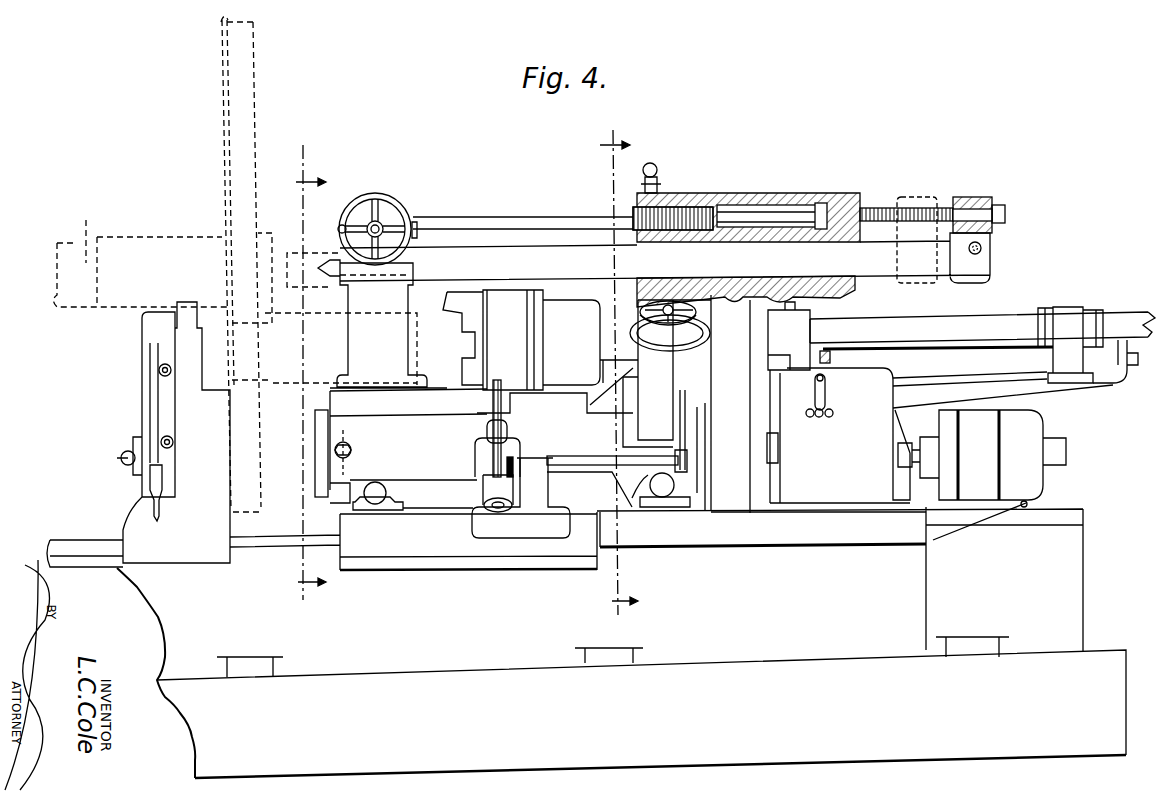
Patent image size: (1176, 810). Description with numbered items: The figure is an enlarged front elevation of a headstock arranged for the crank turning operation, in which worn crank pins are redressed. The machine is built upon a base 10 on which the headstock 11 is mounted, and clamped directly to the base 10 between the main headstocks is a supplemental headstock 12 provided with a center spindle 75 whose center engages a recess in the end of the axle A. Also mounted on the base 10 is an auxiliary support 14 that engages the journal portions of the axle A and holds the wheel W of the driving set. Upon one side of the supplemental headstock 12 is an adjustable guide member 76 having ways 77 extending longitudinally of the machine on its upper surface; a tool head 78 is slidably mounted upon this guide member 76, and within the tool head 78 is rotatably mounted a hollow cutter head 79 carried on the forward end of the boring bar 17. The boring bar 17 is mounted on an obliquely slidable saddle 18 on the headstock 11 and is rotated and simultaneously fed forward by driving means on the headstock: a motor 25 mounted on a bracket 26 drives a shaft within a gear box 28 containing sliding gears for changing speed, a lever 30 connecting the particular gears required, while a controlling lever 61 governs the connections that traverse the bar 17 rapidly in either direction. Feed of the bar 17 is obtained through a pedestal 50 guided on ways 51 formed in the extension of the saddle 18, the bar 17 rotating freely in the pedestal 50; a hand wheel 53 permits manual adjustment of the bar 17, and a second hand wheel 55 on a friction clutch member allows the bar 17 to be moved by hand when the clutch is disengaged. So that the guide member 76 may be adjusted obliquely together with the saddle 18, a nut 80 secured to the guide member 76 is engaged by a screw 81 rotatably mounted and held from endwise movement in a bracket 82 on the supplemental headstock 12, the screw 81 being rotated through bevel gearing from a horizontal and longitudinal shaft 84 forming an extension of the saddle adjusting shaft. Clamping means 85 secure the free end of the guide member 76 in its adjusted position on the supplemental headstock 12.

The base 10 is at (727, 648).
The headstock 11 is at (773, 196).
The supplemental headstock 12 is at (368, 542).
The auxiliary support 14 is at (180, 540).
The boring bar 17 is at (937, 330).
The saddle 18 is at (1083, 385).
The motor 25 is at (1032, 425).
The bracket 26 is at (1028, 503).
The gear box 28 is at (887, 373).
The lever 30 is at (833, 412).
The pedestal 50 is at (1070, 315).
The ways 51 is at (1022, 367).
The hand wheel 53 is at (683, 323).
The hand wheel 55 is at (662, 350).
The controlling lever 61 is at (830, 352).
The center spindle 75 is at (517, 257).
The guide member 76 is at (433, 463).
The ways 77 is at (323, 407).
The tool head 78 is at (508, 312).
The hollow cutter head 79 is at (570, 313).
The nut 80 is at (509, 430).
The screw 81 is at (490, 405).
The bracket 82 is at (518, 520).
The horizontal and longitudinal shaft 84 is at (583, 462).
The clamping means 85 is at (351, 451).
The wheel W is at (245, 115).
The axle A is at (141, 252).